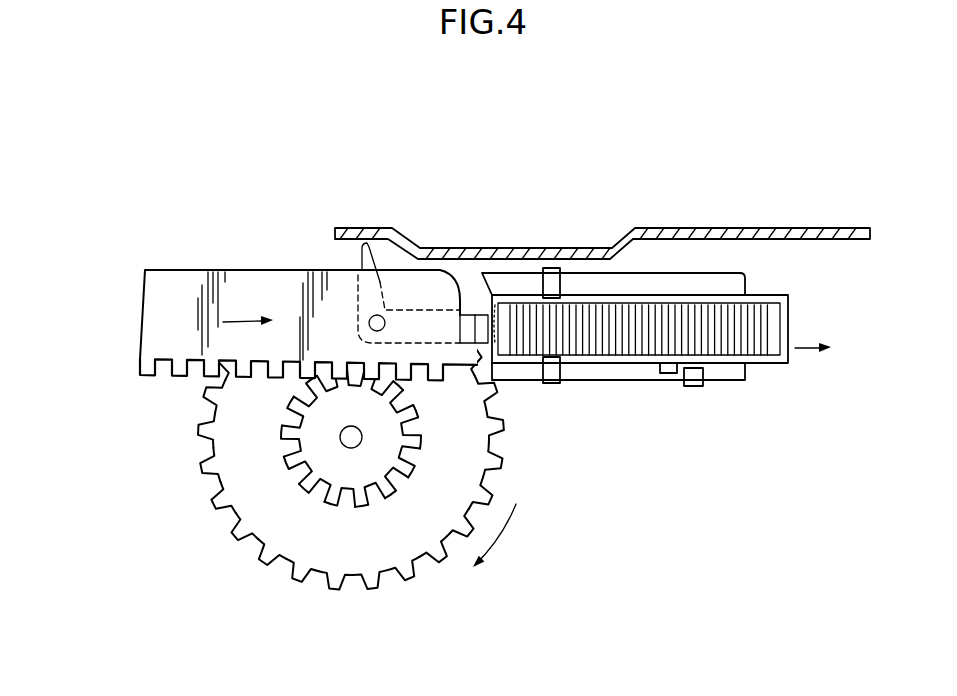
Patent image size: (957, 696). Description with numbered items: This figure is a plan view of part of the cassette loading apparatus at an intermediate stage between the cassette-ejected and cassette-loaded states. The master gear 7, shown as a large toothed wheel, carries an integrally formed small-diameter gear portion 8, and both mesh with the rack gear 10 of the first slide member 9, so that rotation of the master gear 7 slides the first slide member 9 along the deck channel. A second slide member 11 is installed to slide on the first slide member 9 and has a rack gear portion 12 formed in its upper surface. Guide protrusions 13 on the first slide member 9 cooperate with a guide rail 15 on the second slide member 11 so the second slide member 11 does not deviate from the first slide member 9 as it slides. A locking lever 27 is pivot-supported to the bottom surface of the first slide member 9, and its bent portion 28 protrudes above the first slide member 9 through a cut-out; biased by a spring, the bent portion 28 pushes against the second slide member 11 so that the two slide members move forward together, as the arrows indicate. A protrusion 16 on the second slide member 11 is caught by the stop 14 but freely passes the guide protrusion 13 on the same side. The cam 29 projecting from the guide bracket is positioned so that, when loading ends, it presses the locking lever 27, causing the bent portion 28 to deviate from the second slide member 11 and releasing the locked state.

The master gear 7 is at (213, 536).
The gear portion 8 is at (281, 440).
The first slide member 9 is at (143, 293).
The rack gear 10 is at (168, 372).
The second slide member 11 is at (792, 313).
The rack gear portion 12 is at (690, 318).
The guide protrusions 13 is at (548, 384).
The stop 14 is at (693, 387).
The guide rail 15 is at (585, 364).
The protrusion 16 is at (666, 376).
The locking lever 27 is at (362, 265).
The bent portion 28 is at (467, 314).
The cam 29 is at (518, 256).